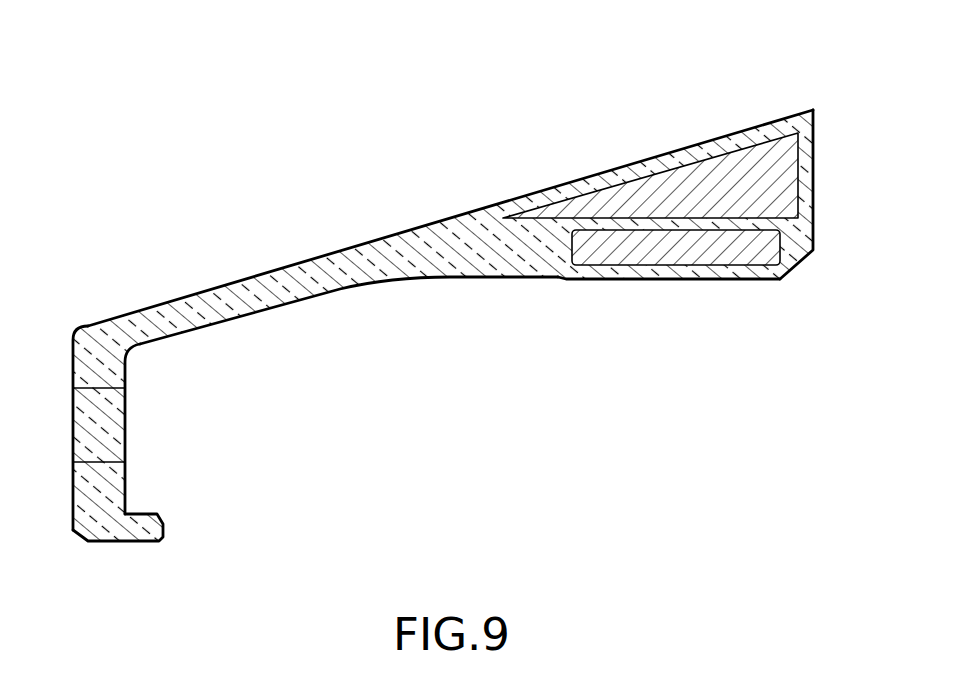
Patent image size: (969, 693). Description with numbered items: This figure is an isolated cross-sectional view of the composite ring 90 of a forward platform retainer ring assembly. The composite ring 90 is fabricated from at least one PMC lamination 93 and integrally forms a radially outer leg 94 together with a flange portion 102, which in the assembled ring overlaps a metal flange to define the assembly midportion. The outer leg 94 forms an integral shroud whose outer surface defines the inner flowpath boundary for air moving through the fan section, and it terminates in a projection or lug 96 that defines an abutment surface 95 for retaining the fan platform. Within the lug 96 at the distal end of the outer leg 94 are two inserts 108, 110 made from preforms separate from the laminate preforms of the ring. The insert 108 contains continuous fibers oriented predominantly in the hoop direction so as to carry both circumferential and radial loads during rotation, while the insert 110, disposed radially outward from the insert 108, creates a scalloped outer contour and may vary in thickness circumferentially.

The composite ring 90 is at (612, 145).
The PMC lamination 93 is at (75, 445).
The radially outer leg 94 is at (385, 263).
The abutment surface 95 is at (702, 280).
The lug 96 is at (815, 150).
The flange portion 102 is at (112, 500).
The insert 108 is at (642, 258).
The insert 110 is at (592, 190).